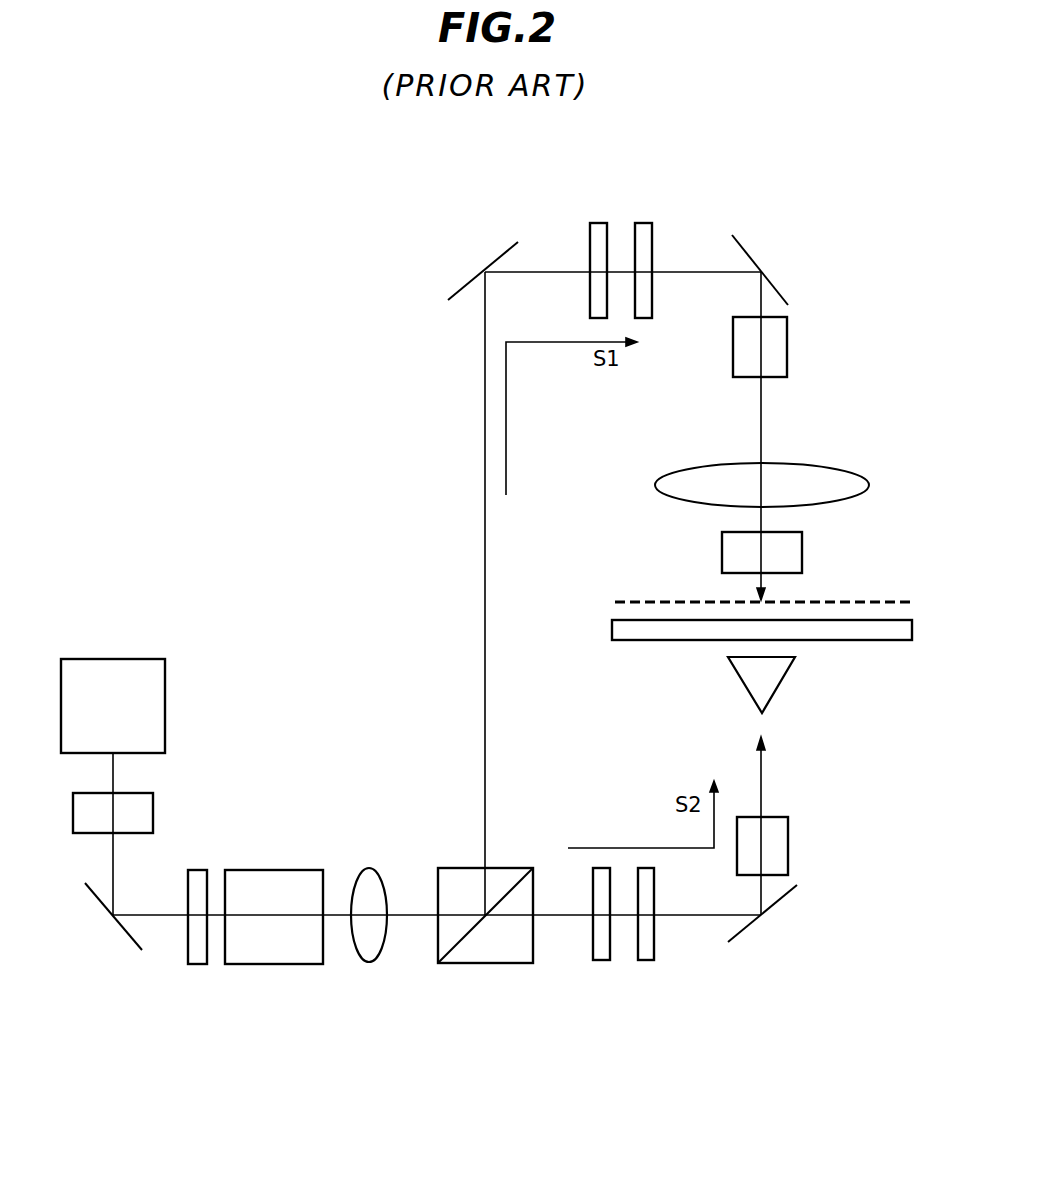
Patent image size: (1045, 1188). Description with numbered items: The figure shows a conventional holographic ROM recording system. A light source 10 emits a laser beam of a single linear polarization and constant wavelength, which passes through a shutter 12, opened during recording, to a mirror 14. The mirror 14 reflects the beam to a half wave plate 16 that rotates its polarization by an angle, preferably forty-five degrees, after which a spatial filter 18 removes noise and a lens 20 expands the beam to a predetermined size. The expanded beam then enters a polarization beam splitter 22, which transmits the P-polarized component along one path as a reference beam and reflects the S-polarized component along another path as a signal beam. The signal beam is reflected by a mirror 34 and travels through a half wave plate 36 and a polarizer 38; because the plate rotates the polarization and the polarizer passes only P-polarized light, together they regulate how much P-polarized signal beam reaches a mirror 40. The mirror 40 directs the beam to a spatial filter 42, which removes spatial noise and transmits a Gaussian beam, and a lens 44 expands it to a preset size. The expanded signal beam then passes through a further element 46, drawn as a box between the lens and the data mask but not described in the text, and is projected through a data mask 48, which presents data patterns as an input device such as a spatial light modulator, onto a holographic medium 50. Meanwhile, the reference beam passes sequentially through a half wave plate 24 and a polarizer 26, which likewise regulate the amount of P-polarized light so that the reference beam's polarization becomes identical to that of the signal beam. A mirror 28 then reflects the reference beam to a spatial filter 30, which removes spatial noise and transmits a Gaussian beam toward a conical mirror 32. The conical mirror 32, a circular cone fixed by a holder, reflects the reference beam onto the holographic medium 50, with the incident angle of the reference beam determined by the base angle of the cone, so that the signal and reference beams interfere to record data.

The light source 10 is at (166, 700).
The shutter 12 is at (154, 812).
The mirror 14 is at (133, 945).
The half wave plate 16 is at (197, 965).
The spatial filter 18 is at (273, 965).
The lens 20 is at (369, 962).
The polarization beam splitter 22 is at (487, 964).
The half wave plate 24 is at (601, 961).
The polarizer 26 is at (646, 961).
The mirror 28 is at (746, 928).
The spatial filter 30 is at (789, 845).
The conical mirror 32 is at (780, 686).
The mirror 34 is at (462, 290).
The half wave plate 36 is at (600, 222).
The polarizer 38 is at (643, 222).
The mirror 40 is at (778, 288).
The spatial filter 42 is at (788, 345).
The lens 44 is at (822, 470).
The objective 46 is at (721, 553).
The data mask 48 is at (882, 600).
The holographic medium 50 is at (887, 641).